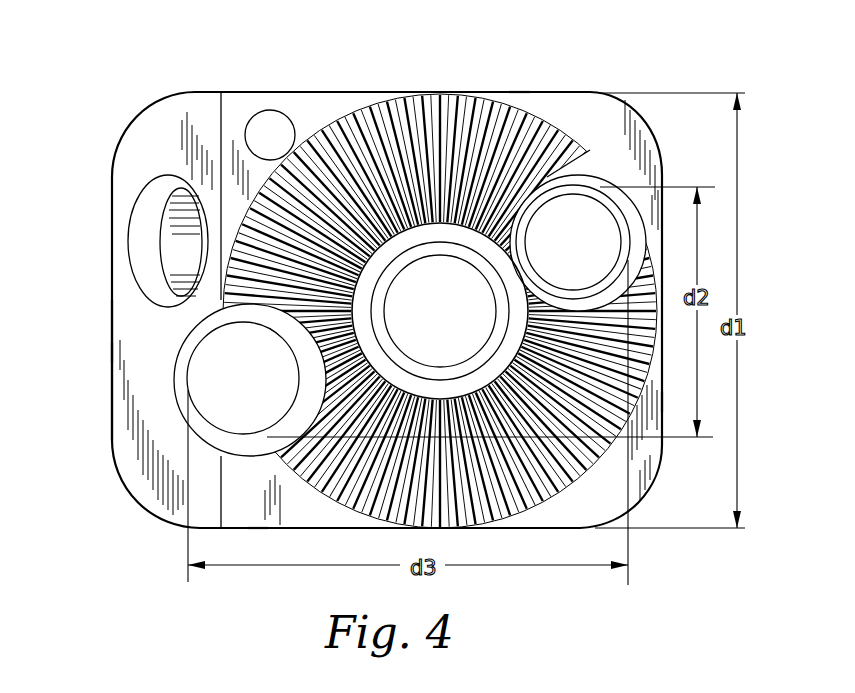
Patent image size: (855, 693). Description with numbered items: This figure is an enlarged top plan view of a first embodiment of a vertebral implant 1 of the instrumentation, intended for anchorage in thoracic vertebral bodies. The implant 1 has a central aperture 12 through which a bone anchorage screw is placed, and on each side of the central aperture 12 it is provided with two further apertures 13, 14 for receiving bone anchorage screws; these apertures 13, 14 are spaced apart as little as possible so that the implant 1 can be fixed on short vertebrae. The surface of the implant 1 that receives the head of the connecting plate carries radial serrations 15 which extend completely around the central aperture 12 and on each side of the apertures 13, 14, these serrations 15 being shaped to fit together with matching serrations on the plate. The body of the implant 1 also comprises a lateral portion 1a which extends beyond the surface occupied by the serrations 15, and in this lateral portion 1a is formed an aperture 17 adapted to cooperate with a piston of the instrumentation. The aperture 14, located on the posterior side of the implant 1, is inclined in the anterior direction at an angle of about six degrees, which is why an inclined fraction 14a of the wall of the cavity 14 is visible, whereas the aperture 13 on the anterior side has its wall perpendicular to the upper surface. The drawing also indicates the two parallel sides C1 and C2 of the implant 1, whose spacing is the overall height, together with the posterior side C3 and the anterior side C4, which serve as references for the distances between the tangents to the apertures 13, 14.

The vertebral implant 1 is at (690, 157).
The lateral portion 1a is at (112, 420).
The central aperture 12 is at (453, 323).
The aperture 13 is at (258, 394).
The aperture 14 is at (588, 254).
The inclined fraction of the wall 14a is at (630, 237).
The radial serrations 15 is at (321, 157).
The aperture 17 is at (137, 252).
The side C1 is at (521, 92).
The side C2 is at (258, 528).
The posterior side C3 is at (663, 402).
The anterior side C4 is at (112, 353).